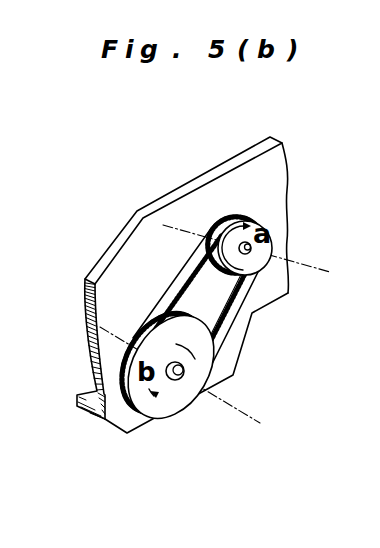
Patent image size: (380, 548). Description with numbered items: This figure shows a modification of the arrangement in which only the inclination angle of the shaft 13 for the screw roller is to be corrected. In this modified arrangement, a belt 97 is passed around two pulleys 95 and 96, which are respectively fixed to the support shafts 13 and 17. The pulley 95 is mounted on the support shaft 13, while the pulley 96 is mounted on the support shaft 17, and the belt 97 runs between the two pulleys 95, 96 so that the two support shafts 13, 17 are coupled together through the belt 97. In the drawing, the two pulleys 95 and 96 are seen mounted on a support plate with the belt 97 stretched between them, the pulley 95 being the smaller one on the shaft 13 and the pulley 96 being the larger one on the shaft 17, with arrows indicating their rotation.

The pulley 95 is at (252, 216).
The support shaft 13 is at (252, 249).
The belt 97 is at (232, 323).
The pulley 96 is at (183, 388).
The support shaft 17 is at (171, 381).